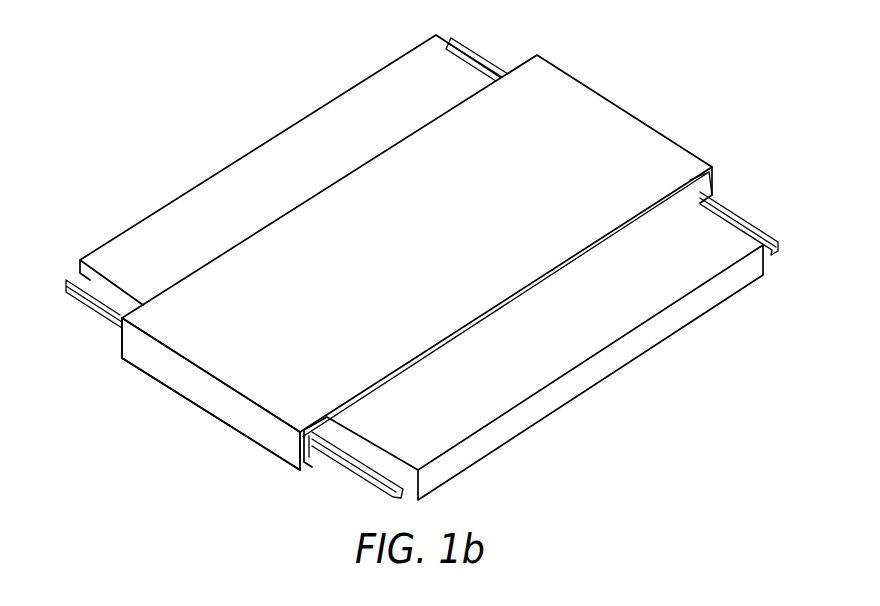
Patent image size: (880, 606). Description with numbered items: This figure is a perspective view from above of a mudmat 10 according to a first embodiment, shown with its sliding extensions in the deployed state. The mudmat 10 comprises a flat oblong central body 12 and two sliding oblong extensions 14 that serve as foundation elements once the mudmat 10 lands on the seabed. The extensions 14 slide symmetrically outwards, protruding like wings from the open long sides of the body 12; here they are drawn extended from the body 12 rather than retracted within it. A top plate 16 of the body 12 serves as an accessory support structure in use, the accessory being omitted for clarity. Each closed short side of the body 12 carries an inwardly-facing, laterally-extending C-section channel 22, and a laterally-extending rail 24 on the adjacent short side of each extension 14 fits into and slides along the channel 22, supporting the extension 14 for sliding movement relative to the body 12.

The mudmat 10 is at (622, 67).
The central body 12 is at (437, 252).
The sliding oblong extension 14 is at (283, 133).
The top plate 16 is at (224, 362).
The C-section channel 22 is at (707, 185).
The rail 24 is at (478, 52).